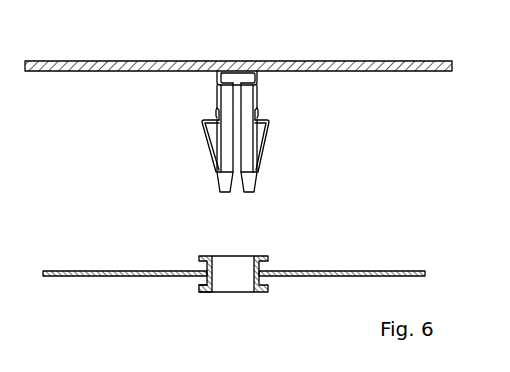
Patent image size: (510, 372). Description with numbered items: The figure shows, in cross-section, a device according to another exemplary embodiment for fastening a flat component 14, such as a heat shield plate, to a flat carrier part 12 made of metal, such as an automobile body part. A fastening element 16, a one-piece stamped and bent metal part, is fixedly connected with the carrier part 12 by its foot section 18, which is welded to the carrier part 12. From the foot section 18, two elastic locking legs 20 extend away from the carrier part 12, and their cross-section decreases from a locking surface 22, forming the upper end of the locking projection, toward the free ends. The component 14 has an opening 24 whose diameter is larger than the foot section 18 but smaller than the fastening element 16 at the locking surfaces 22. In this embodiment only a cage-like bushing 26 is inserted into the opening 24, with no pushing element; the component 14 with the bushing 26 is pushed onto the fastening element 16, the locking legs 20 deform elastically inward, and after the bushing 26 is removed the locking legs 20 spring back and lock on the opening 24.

The carrier part 12 is at (337, 61).
The component 14 is at (353, 270).
The fastening element 16 is at (204, 100).
The foot section 18 is at (259, 71).
The locking legs 20 is at (205, 143).
The locking surface 22 is at (205, 120).
The opening 24 is at (268, 264).
The bushing 26 is at (200, 288).